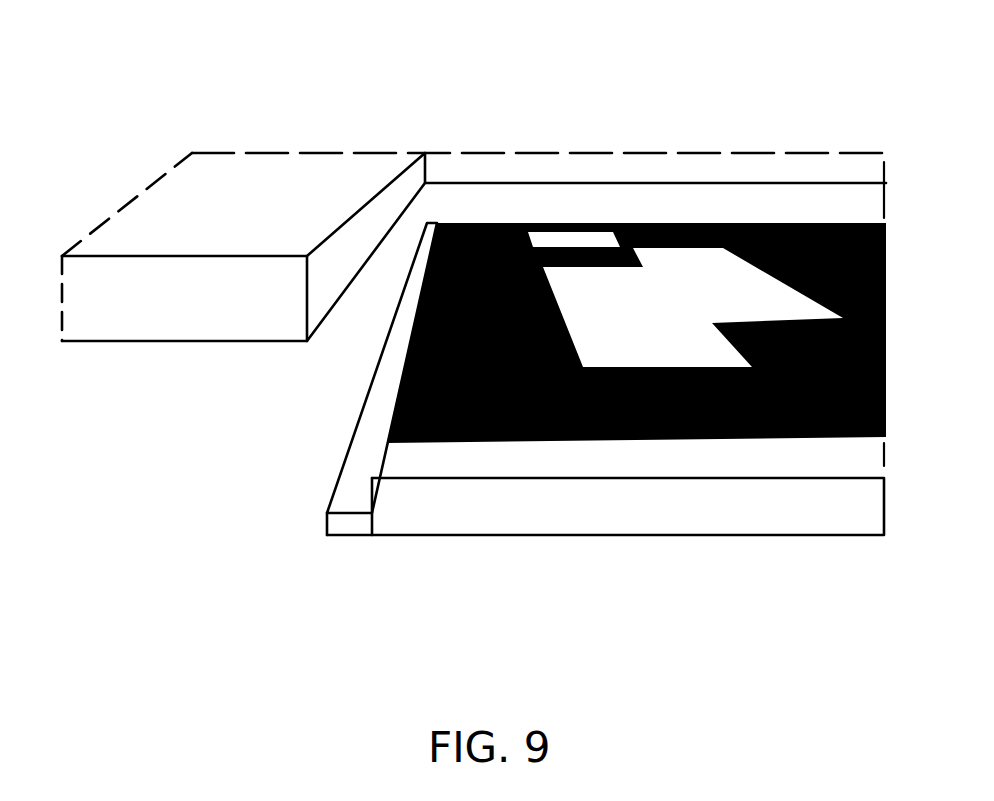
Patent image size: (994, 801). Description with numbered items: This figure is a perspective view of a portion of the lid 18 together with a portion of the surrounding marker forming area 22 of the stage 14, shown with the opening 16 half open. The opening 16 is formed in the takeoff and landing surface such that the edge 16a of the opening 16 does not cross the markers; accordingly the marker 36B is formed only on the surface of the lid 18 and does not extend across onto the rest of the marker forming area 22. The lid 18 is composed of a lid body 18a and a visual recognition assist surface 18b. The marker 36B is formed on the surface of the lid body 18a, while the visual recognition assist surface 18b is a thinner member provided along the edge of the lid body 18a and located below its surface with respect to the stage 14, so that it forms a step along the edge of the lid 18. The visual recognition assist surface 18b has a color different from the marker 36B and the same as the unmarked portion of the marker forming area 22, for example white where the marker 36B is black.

The stage 14 is at (150, 313).
The opening 16 is at (582, 203).
The edge of the opening 16a is at (373, 217).
The lid 18 is at (545, 449).
The lid body 18a is at (523, 550).
The visual recognition assist surface 18b is at (350, 448).
The marker forming area 22 is at (192, 181).
The marker 36B is at (777, 440).